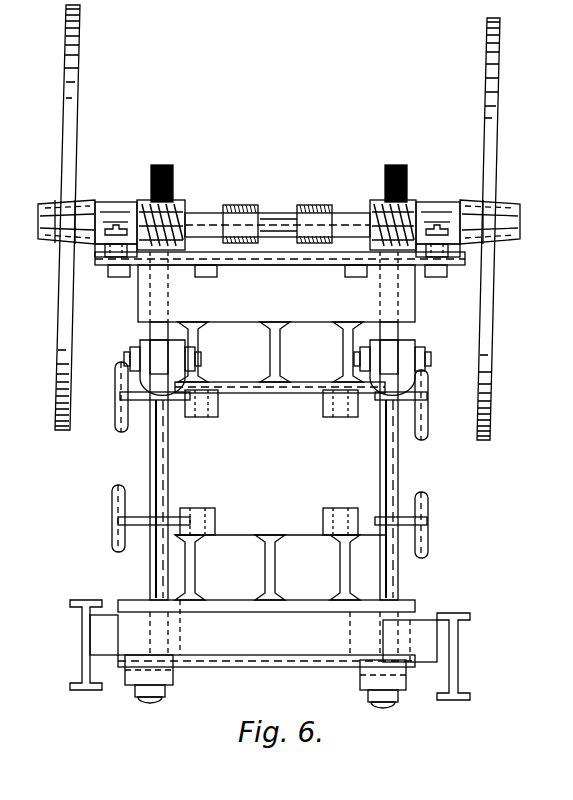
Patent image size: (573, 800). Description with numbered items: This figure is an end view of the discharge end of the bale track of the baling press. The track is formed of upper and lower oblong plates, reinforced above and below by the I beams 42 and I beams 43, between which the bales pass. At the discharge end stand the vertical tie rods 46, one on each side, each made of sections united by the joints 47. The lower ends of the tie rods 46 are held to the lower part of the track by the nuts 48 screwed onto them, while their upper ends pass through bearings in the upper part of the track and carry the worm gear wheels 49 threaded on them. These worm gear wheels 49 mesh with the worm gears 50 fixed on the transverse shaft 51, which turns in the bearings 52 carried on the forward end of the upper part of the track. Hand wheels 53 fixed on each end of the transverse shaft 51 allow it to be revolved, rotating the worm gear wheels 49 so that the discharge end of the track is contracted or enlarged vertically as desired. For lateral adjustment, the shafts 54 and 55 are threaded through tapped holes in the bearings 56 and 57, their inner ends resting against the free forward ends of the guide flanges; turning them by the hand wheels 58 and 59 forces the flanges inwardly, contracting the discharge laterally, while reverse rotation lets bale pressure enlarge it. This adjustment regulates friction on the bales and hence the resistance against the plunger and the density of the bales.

The I beam 42 is at (279, 364).
The I beam 43 is at (270, 573).
The vertical tie rod 46 is at (150, 466).
The joint 47 is at (146, 345).
The nut 48 is at (134, 686).
The worm gear wheel 49 is at (251, 243).
The worm gear 50 is at (178, 204).
The transverse shaft 51 is at (286, 213).
The bearing 52 is at (134, 205).
The hand wheel 53 is at (63, 313).
The shaft 54 is at (140, 401).
The shaft 55 is at (140, 518).
The bearing 56 is at (200, 418).
The bearing 57 is at (205, 505).
The hand wheel 58 is at (121, 421).
The hand wheel 59 is at (118, 521).